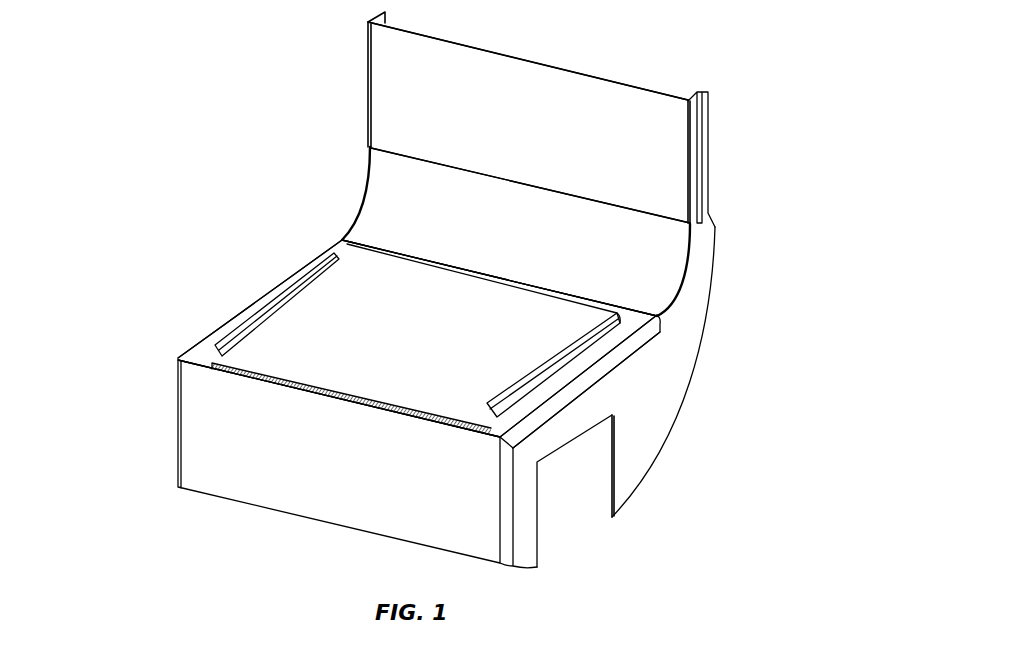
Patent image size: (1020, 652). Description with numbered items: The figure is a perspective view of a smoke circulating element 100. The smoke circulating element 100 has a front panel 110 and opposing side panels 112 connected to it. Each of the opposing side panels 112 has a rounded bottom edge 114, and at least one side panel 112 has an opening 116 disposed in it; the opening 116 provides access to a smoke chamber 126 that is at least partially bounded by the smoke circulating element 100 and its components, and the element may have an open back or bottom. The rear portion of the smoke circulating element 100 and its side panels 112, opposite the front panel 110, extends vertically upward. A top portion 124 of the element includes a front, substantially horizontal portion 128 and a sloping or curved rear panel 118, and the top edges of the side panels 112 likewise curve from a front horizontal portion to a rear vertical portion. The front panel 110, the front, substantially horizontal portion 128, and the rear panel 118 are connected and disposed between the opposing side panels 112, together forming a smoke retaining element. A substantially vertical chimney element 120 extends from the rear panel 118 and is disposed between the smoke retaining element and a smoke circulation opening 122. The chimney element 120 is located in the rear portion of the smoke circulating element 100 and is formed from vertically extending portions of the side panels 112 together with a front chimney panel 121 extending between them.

The smoke circulating element 100 is at (314, 45).
The front panel 110 is at (226, 433).
The side panel 112 is at (650, 397).
The rounded bottom edge 114 is at (648, 472).
The opening 116 is at (572, 475).
The rear panel 118 is at (630, 253).
The chimney element 120 is at (703, 161).
The front chimney panel 121 is at (587, 113).
The smoke circulation opening 122 is at (553, 64).
The top portion 124 is at (373, 296).
The smoke chamber 126 is at (571, 534).
The front, substantially horizontal portion 128 is at (282, 345).